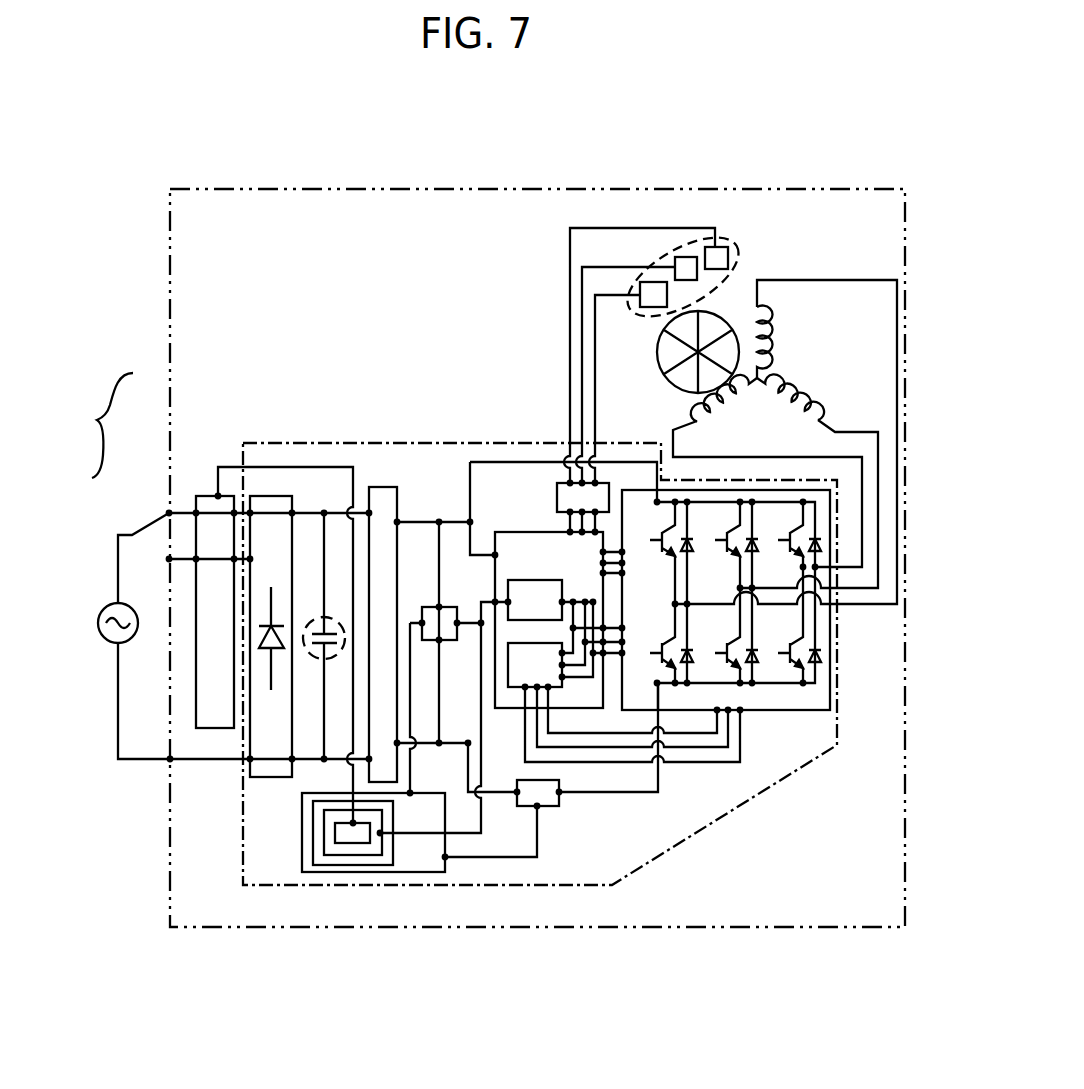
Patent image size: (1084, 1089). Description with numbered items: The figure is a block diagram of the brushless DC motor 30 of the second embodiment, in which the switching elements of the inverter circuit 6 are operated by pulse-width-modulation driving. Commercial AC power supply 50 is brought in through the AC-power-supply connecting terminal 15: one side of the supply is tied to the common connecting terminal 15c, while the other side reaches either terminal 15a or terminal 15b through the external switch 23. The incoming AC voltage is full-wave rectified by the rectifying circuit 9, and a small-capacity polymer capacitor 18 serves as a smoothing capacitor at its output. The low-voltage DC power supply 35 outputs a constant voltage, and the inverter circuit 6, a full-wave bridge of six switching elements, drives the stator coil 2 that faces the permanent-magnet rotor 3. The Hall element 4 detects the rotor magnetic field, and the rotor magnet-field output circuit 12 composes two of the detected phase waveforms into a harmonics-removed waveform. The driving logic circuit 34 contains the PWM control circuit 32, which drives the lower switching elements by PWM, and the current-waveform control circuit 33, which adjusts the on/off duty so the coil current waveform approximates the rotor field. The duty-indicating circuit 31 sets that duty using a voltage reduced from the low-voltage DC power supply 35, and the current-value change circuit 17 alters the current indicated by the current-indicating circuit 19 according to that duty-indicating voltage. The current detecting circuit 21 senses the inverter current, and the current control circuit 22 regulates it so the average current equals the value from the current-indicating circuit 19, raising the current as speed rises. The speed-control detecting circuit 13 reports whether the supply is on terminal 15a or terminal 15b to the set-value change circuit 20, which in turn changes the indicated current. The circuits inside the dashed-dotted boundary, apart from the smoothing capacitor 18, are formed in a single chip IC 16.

The stator coil 2 is at (722, 342).
The permanent-magnet rotor 3 is at (660, 333).
The Hall element 4 is at (735, 243).
The inverter circuit 6 is at (830, 690).
The rectifying circuit 9 is at (273, 777).
The rotor magnet-field output circuit 12 is at (565, 478).
The speed-control detecting circuit 13 is at (200, 693).
The AC-power-supply connecting terminal 15 is at (98, 425).
The terminal 15a is at (169, 513).
The terminal 15b is at (169, 559).
The common connecting terminal 15c is at (170, 759).
The single chip IC 16 is at (247, 442).
The current-value change circuit 17 is at (332, 855).
The polymer capacitor 18 is at (313, 615).
The current-indicating circuit 19 is at (388, 865).
The set-value change circuit 20 is at (352, 843).
The current detecting circuit 21 is at (528, 798).
The current control circuit 22 is at (435, 872).
The external switch 23 is at (147, 525).
The brushless DC motor 30 is at (536, 189).
The duty-indicating circuit 31 is at (437, 605).
The PWM control circuit 32 is at (535, 590).
The current-waveform control circuit 33 is at (526, 657).
The driving logic circuit 34 is at (549, 673).
The low-voltage DC power supply 35 is at (380, 487).
The AC power supply 50 is at (106, 607).